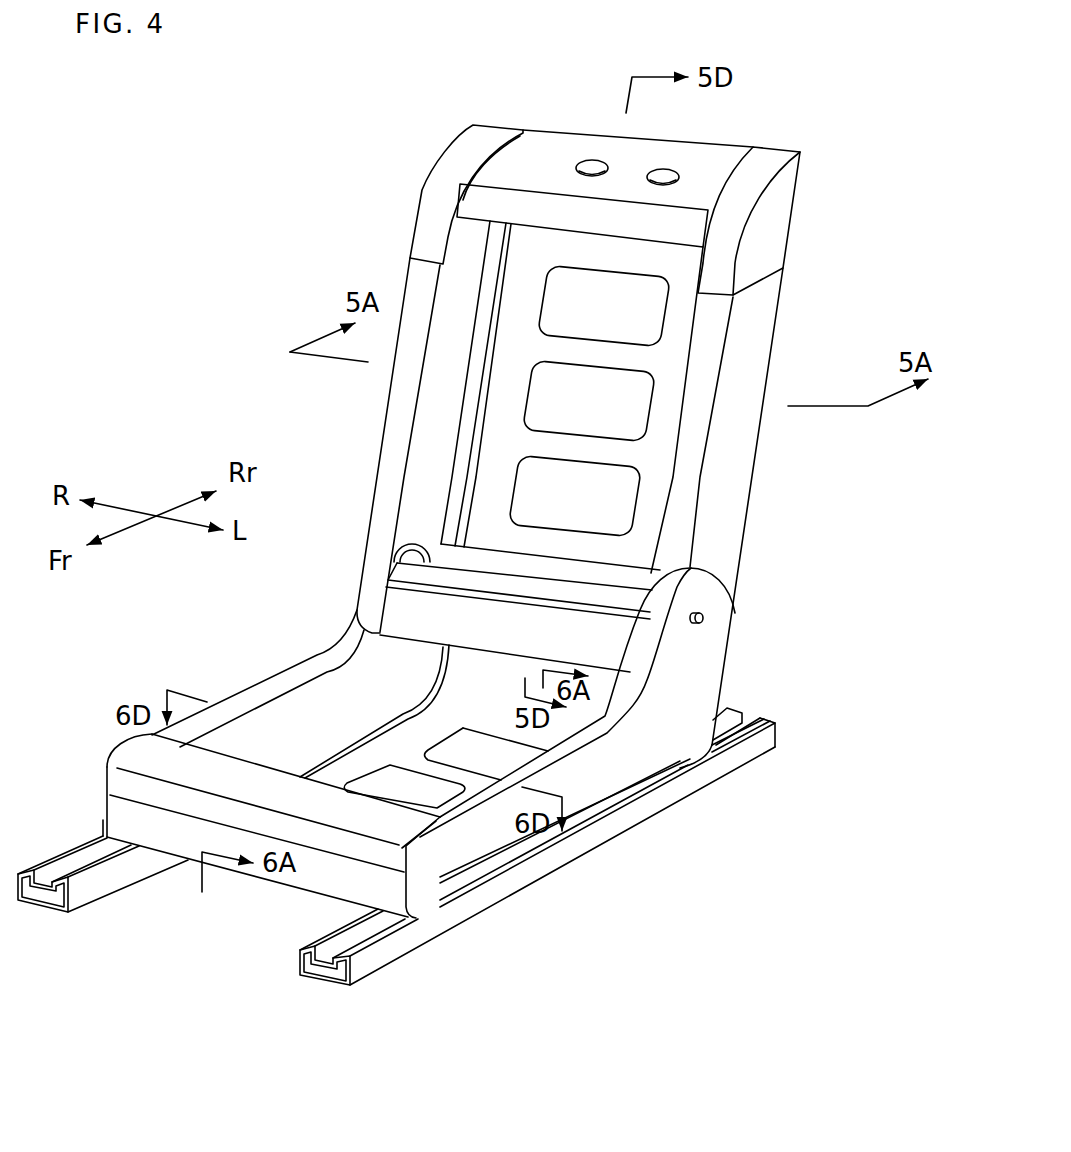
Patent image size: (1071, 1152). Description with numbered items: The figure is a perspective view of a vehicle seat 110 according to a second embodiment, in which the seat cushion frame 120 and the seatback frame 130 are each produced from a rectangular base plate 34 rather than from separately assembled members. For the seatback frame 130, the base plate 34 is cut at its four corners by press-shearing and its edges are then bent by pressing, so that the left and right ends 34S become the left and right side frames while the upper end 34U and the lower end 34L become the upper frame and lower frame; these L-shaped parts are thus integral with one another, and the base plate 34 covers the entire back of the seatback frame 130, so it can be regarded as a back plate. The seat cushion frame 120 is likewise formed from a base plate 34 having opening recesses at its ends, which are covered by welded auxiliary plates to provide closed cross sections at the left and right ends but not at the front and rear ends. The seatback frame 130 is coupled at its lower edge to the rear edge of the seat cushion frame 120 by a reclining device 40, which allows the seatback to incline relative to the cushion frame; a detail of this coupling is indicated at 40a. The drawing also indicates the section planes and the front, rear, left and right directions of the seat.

The vehicle seat 110 is at (277, 307).
The seat cushion frame 120 is at (243, 665).
The seatback frame 130 is at (366, 432).
The base plate 34 is at (690, 345).
The upper end 34U is at (696, 157).
The left and right ends 34S is at (417, 290).
The lower end 34L is at (607, 648).
The reclining device 40 is at (412, 530).
The hinge pin 40a is at (708, 620).